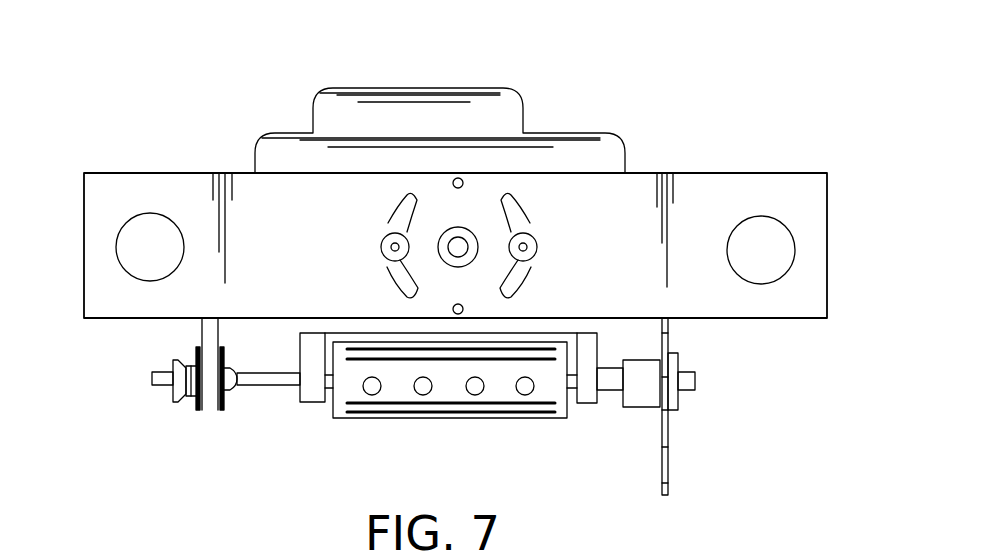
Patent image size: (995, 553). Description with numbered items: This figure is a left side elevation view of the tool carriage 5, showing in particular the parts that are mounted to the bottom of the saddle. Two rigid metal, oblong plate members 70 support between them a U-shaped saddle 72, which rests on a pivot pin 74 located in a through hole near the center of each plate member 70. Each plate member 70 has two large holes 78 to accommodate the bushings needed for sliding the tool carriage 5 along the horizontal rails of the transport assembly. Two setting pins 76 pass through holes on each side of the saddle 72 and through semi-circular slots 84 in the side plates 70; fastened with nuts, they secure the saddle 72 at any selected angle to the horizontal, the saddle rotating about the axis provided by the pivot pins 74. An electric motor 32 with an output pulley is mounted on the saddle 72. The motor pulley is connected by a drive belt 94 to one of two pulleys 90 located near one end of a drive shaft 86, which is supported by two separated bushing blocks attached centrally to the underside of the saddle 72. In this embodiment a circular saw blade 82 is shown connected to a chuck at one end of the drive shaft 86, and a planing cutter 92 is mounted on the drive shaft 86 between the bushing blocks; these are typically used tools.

The tool carriage 5 is at (203, 137).
The plate member 70 is at (697, 172).
The large holes 78 is at (125, 253).
The electric motor 32 is at (537, 132).
The pivot pin 74 is at (457, 230).
The setting pin 76 is at (382, 248).
The semi-circular slots 84 is at (398, 275).
The saddle 72 is at (302, 333).
The planing cutter 92 is at (512, 392).
The drive belt 94 is at (205, 325).
The pulley 90 is at (213, 407).
The drive shaft 86 is at (243, 388).
The circular saw blade 82 is at (665, 463).